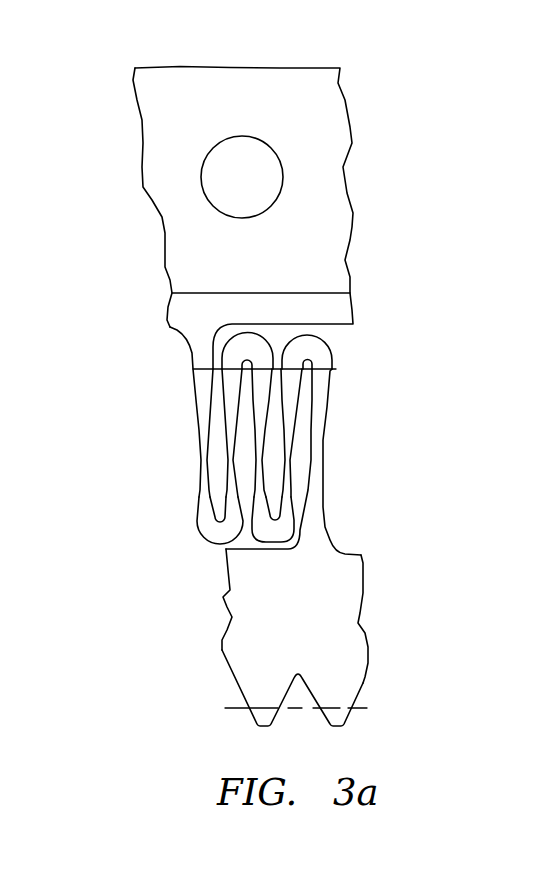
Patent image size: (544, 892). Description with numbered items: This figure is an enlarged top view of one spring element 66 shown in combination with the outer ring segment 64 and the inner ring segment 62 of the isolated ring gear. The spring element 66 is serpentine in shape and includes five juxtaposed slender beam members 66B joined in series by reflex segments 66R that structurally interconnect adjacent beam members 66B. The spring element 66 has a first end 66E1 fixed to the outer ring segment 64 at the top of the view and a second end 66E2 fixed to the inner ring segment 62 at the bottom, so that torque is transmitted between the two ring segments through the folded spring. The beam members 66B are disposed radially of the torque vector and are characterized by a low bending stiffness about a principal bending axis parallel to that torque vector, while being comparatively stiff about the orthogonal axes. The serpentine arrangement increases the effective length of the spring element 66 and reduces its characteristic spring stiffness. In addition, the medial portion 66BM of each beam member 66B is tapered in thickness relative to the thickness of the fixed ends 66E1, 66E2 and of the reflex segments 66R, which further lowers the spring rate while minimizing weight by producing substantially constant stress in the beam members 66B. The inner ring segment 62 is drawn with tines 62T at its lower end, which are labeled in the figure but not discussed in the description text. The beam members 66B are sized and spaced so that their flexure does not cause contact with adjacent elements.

The outer ring segment 64 is at (298, 264).
The inner ring segment 62 is at (338, 637).
The terminal tines of second contact member 62T is at (360, 692).
The spring element 66 is at (386, 463).
The first end 66E1 is at (197, 351).
The second end 66E2 is at (318, 517).
The beam member 66B is at (290, 358).
The medial portion 66BM is at (183, 381).
The reflex segment 66R is at (267, 542).